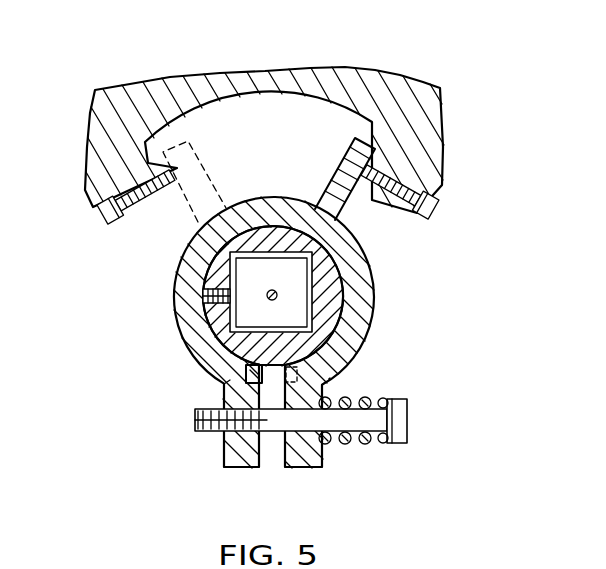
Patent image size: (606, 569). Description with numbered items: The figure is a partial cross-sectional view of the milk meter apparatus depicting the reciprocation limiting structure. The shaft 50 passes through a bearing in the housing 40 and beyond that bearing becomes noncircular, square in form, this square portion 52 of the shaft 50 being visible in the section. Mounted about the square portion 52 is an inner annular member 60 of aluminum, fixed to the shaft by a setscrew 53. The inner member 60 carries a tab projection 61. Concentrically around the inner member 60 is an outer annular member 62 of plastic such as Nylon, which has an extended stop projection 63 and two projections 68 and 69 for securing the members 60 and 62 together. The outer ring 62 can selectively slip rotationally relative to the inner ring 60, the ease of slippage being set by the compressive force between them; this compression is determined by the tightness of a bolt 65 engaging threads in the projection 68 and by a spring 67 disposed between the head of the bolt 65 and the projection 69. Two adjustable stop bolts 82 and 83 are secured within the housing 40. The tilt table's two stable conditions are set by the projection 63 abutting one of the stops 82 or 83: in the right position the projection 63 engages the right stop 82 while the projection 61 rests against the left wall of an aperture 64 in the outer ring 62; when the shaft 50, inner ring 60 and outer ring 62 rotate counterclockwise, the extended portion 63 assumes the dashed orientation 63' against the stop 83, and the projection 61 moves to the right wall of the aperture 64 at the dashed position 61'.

The housing 40 is at (432, 120).
The shaft 50 is at (276, 298).
The square opening 52 is at (314, 312).
The setscrew 53 is at (205, 301).
The inner annular member 60 is at (185, 262).
The tab projection 61 is at (191, 388).
The dashed position of tab projection 61' is at (367, 361).
The outer annular member 62 is at (362, 262).
The extended stop projection 63 is at (332, 178).
The dashed orientation of stop projection 63' is at (212, 174).
The aperture 64 is at (296, 372).
The bolt 65 is at (407, 422).
The spring 67 is at (355, 443).
The projection 68 is at (242, 455).
The projection 69 is at (303, 457).
The adjustable stop bolt 82 is at (437, 215).
The adjustable stop bolt 83 is at (106, 222).